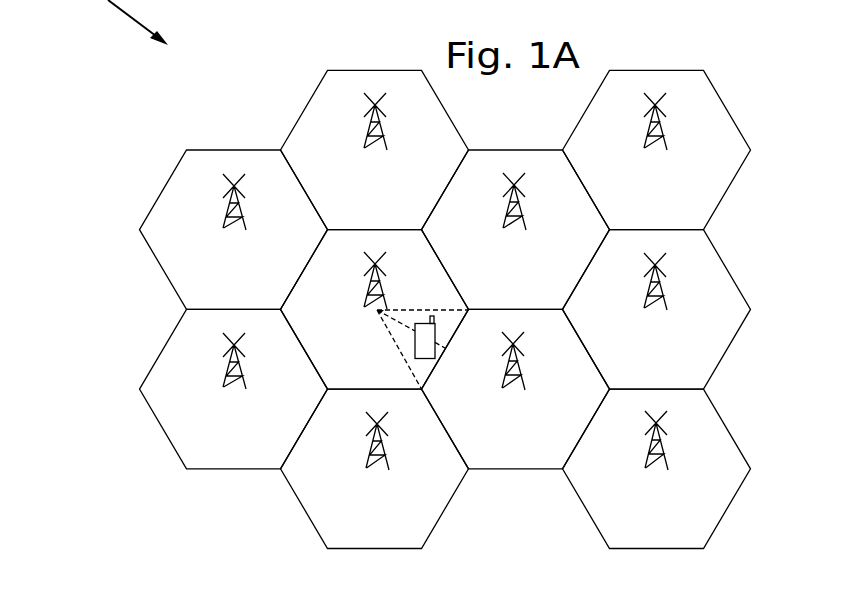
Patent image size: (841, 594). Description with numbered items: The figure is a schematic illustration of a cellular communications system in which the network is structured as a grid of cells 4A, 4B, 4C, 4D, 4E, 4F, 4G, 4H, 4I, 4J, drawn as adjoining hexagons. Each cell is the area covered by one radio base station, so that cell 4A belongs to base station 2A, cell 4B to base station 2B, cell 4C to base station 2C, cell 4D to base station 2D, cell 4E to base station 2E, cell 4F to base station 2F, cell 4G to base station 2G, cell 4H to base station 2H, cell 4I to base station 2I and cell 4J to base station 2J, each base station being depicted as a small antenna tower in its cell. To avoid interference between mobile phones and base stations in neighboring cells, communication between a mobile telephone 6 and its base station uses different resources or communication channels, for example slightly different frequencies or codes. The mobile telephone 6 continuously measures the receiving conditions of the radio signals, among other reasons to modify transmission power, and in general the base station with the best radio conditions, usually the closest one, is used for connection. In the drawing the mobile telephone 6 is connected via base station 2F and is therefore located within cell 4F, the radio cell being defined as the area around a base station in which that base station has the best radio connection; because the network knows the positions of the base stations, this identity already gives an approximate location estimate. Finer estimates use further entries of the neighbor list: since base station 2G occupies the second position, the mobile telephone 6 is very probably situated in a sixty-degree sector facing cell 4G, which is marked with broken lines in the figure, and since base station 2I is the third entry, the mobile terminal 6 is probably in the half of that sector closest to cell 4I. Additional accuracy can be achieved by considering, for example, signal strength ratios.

The radio base station 2A is at (223, 231).
The radio base station 2B is at (386, 146).
The radio base station 2C is at (511, 231).
The radio base station 2D is at (658, 150).
The radio base station 2E is at (244, 381).
The radio base station 2F is at (375, 309).
The radio base station 2G is at (518, 390).
The radio base station 2H is at (655, 310).
The radio base station 2I is at (373, 465).
The radio base station 2J is at (665, 463).
The cell 4A is at (303, 238).
The cell 4B is at (388, 200).
The cell 4C is at (584, 239).
The cell 4D is at (724, 160).
The cell 4E is at (228, 432).
The cell 4F is at (391, 363).
The cell 4G is at (584, 398).
The cell 4H is at (724, 318).
The cell 4I is at (437, 479).
The cell 4J is at (656, 518).
The mobile telephone 6 is at (423, 350).